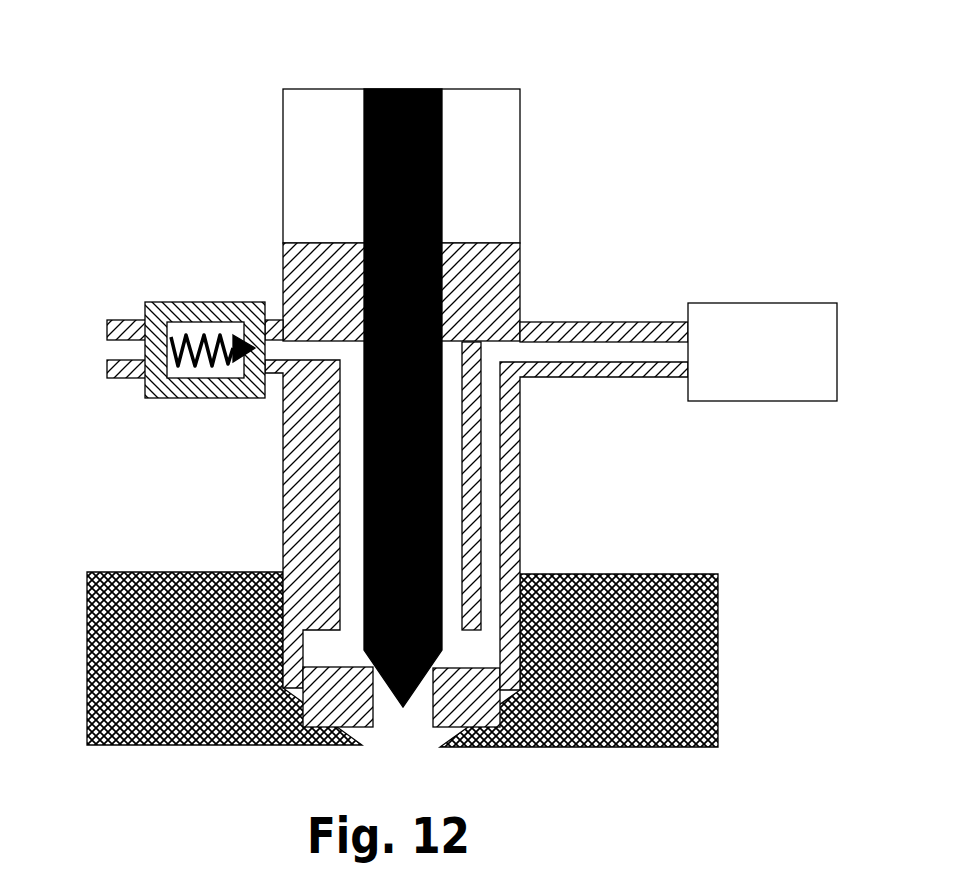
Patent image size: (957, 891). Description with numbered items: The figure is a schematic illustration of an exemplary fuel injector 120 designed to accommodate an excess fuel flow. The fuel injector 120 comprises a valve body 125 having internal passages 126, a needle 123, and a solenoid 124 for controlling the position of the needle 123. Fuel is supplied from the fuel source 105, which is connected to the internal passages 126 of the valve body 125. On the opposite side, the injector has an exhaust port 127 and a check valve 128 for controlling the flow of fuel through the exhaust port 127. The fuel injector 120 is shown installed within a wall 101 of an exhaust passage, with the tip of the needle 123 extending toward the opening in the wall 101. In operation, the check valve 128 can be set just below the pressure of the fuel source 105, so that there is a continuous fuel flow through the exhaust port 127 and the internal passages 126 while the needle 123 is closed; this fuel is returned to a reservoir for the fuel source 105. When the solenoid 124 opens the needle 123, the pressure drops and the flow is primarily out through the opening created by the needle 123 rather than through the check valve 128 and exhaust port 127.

The fuel injector 120 is at (350, 381).
The needle 123 is at (398, 110).
The solenoid 124 is at (310, 167).
The valve body 125 is at (287, 275).
The internal passages 126 is at (497, 458).
The exhaust port 127 is at (118, 327).
The check valve 128 is at (218, 310).
The fuel source 105 is at (815, 317).
The wall 101 is at (190, 583).